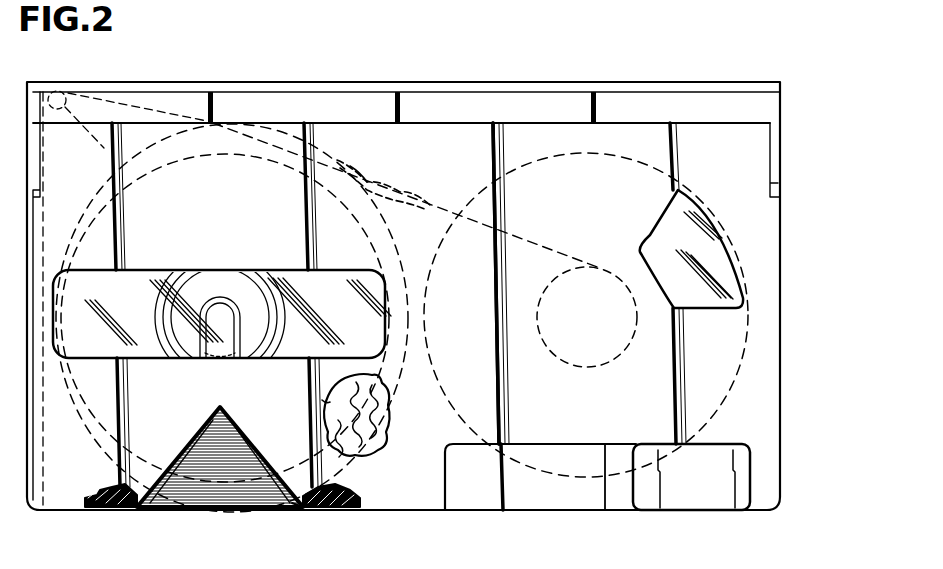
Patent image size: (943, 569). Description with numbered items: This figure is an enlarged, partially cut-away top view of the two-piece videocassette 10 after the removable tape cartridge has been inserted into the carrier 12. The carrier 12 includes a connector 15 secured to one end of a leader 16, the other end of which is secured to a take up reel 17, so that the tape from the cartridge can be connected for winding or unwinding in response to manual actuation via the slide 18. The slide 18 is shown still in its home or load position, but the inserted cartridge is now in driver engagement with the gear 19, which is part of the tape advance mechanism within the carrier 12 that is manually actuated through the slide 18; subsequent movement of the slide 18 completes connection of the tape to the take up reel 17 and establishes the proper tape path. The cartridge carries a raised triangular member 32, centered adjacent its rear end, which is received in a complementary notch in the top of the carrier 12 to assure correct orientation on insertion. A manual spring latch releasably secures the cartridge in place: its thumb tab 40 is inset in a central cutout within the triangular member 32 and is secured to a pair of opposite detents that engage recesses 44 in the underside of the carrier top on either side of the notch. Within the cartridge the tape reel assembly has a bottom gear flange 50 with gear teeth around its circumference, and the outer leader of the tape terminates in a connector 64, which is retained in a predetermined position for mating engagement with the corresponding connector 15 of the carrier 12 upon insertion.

The two-piece videocassette 10 is at (662, 73).
The carrier 12 is at (752, 252).
The connector 15 is at (401, 187).
The leader 16 is at (492, 190).
The take up reel 17 is at (724, 403).
The slide 18 is at (685, 487).
The gear 19 is at (377, 447).
The triangular member 32 is at (298, 510).
The thumb tab 40 is at (187, 483).
The recesses 44 is at (103, 512).
The bottom gear flange 50 is at (340, 405).
The connector 64 is at (365, 178).